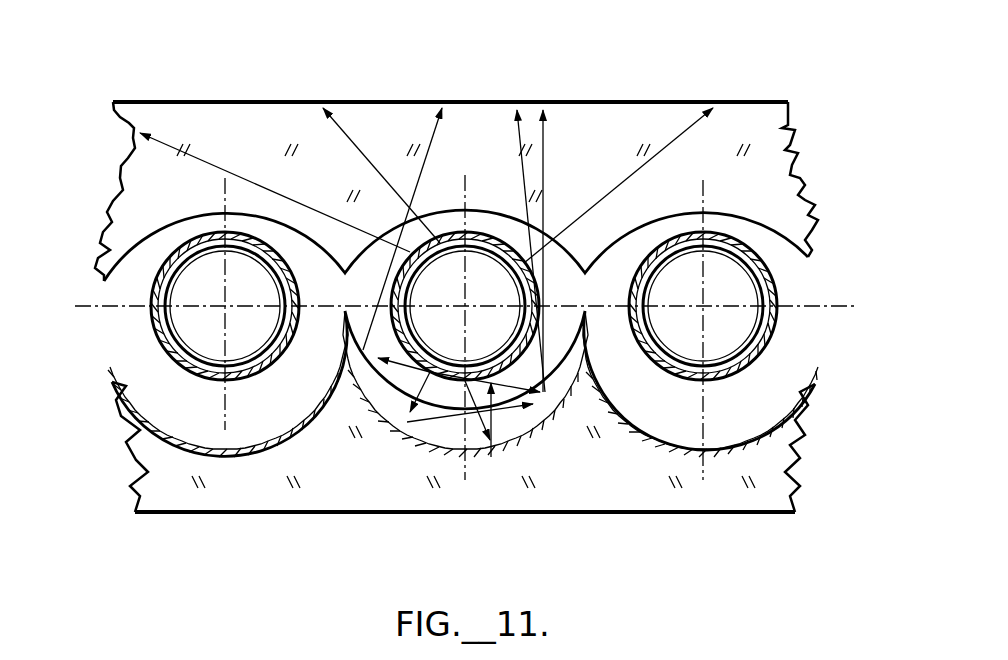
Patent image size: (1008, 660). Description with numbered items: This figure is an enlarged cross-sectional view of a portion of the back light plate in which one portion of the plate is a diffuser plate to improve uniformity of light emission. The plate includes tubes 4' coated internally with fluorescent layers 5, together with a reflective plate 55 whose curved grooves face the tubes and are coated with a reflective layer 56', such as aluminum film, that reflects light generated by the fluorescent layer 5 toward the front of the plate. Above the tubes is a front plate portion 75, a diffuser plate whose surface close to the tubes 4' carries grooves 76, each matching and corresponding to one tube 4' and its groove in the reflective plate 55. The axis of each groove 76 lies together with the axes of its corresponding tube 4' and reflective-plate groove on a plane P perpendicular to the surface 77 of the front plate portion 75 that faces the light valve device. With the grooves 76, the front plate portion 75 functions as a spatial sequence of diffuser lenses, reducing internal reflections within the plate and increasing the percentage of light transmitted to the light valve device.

The tube 4' is at (464, 200).
The fluorescent layer 5 is at (177, 252).
The reflective plate 55 is at (583, 483).
The reflective layer 56' is at (463, 446).
The front plate portion 75 is at (607, 122).
The groove 76 is at (743, 215).
The surface 77 is at (534, 102).
The plane P is at (468, 193).